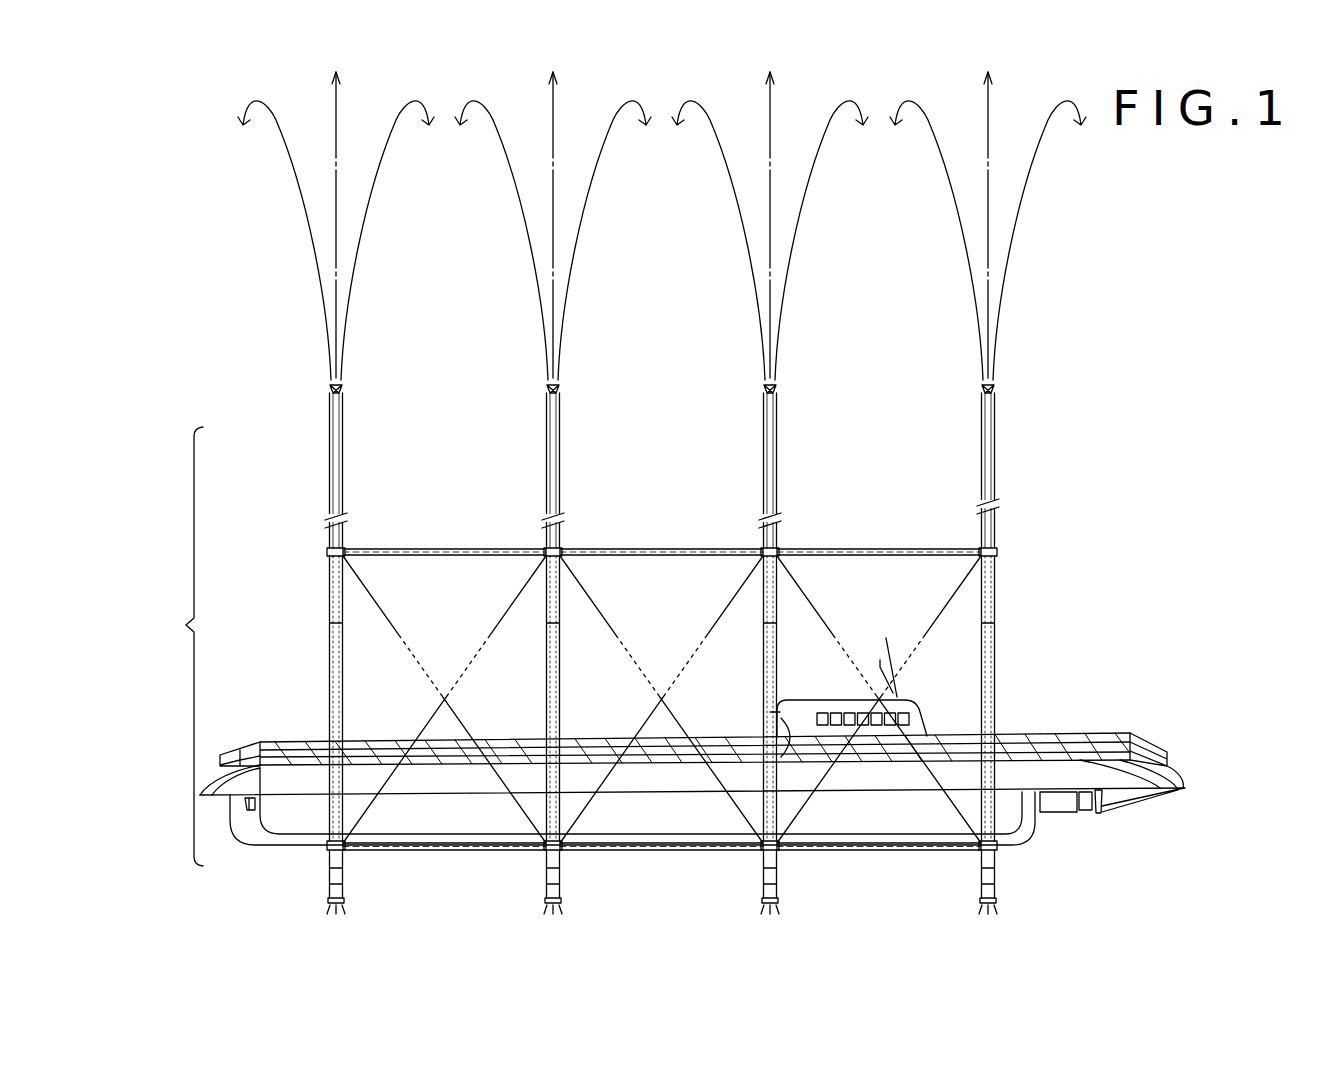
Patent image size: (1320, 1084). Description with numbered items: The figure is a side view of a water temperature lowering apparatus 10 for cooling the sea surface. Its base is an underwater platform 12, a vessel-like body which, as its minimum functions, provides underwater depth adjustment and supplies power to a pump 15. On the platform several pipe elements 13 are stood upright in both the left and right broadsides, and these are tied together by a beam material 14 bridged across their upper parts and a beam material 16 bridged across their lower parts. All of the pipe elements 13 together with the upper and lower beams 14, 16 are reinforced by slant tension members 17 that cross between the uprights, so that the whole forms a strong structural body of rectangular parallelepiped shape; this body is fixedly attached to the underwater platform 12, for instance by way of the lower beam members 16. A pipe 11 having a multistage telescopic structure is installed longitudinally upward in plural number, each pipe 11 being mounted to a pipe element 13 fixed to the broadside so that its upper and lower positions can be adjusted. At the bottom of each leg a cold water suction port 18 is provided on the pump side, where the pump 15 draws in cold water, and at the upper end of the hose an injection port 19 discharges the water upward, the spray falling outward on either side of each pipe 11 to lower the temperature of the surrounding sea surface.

The water temperature lowering apparatus 10 is at (178, 646).
The pipe 11 is at (344, 486).
The underwater platform 12 is at (1178, 764).
The pipe element 13 is at (329, 640).
The upper beam material 14 is at (455, 548).
The pump 15 is at (329, 880).
The lower beam material 16 is at (446, 851).
The slant tension member 17 is at (455, 677).
The cold water suction port 18 is at (345, 901).
The injection port 19 is at (343, 389).